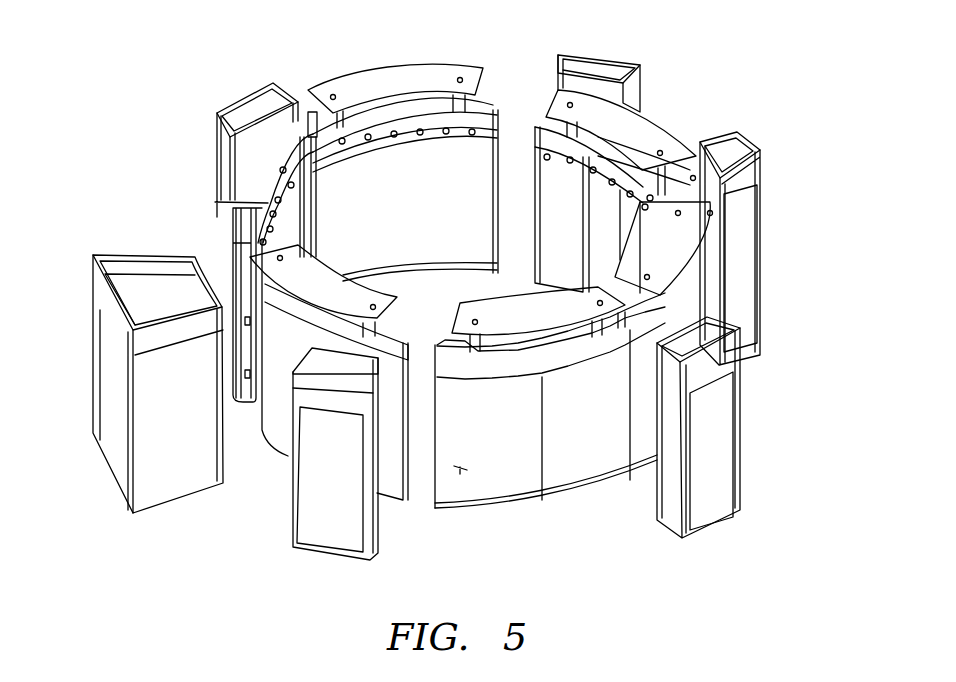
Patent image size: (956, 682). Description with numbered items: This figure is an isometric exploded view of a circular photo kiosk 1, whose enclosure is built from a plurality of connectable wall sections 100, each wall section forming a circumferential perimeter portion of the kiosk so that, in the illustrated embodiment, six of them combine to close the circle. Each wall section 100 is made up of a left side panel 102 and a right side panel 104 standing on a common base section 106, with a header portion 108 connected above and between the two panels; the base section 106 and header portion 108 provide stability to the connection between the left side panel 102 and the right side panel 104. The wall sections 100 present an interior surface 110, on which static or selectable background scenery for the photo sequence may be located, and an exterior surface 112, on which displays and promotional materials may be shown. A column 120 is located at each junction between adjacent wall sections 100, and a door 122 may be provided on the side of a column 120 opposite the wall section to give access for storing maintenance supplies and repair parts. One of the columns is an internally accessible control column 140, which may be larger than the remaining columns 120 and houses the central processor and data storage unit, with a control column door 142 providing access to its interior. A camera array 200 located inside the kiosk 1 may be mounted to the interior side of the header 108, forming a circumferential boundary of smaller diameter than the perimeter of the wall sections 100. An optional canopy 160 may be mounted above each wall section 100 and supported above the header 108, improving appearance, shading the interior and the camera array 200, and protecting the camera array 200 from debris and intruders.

The circular photo kiosk 1 is at (815, 77).
The wall section 100 is at (280, 425).
The left side panel 102 is at (503, 482).
The right side panel 104 is at (560, 478).
The base section 106 is at (468, 505).
The header portion 108 is at (592, 353).
The interior surface 110 is at (483, 168).
The exterior surface 112 is at (460, 470).
The column 120 is at (742, 422).
The door 122 is at (722, 463).
The control column 140 is at (155, 488).
The control column door 142 is at (93, 430).
The canopy 160 is at (662, 122).
The camera array 200 is at (453, 113).